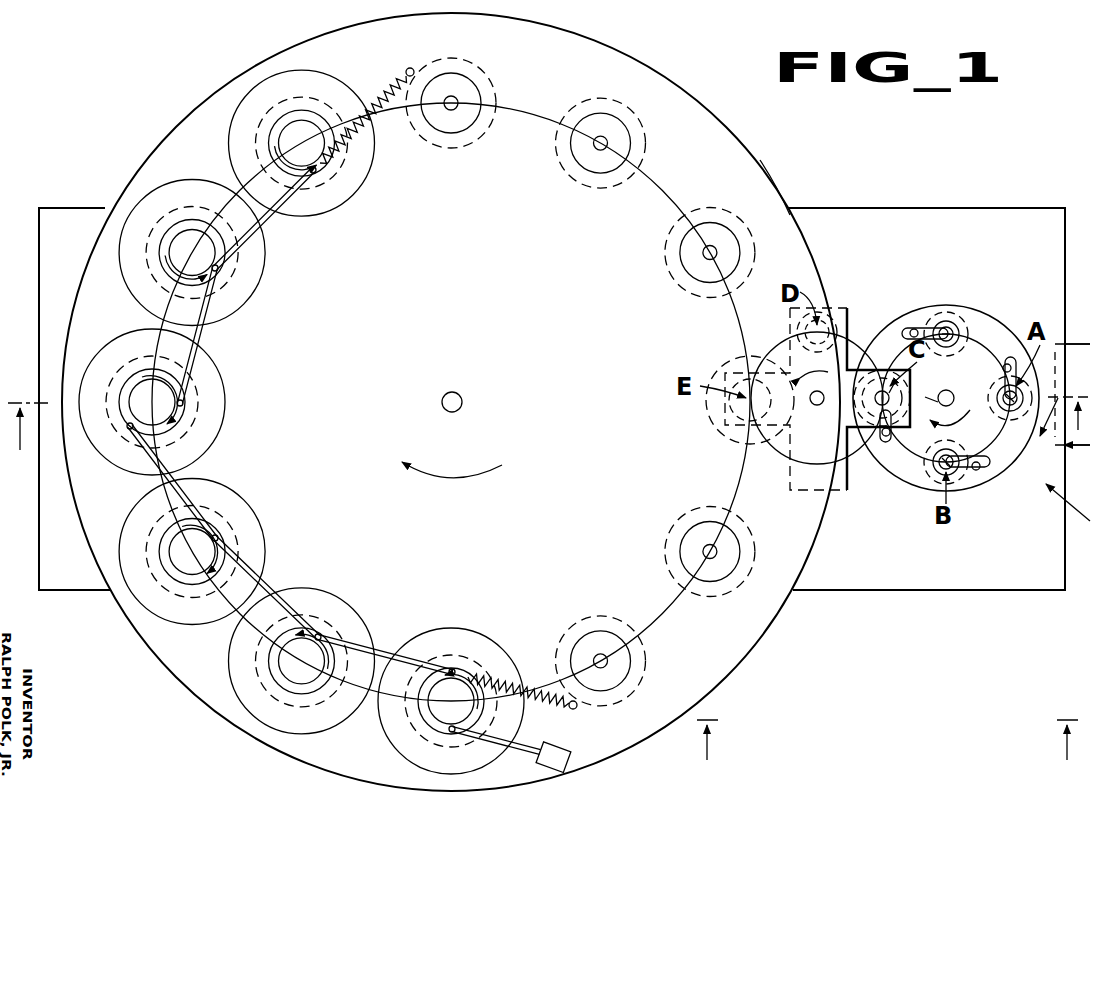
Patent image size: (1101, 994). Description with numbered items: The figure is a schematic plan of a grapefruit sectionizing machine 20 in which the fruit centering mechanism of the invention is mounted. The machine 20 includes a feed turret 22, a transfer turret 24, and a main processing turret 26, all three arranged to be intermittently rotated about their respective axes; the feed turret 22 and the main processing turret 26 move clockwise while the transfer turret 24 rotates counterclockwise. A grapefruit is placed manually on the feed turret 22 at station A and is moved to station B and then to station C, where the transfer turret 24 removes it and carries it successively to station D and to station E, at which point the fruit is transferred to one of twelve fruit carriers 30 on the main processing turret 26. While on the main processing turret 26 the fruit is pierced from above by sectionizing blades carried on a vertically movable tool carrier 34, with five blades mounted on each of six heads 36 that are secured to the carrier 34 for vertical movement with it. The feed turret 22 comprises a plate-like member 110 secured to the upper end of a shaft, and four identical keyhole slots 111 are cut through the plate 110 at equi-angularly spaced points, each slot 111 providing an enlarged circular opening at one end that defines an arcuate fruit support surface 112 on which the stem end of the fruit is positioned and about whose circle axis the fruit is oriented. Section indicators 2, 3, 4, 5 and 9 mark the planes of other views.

The grapefruit sectionizing machine 20 is at (750, 136).
The feed turret 22 is at (951, 379).
The transfer turret 24 is at (845, 306).
The main processing turret 26 is at (660, 190).
The fruit carriers 30 is at (340, 170).
The tool carrier 34 is at (776, 186).
The heads 36 is at (313, 210).
The plate-like member 110 is at (983, 320).
The keyhole slots 111 is at (912, 330).
The arcuate fruit support surface 112 is at (946, 326).
The section line 5- 5 is at (973, 424).
The section line 2- 2 is at (549, 411).
The section line 3- 3 is at (1072, 399).
The section line 4- 4 is at (1065, 502).
The section line 9- 9 is at (887, 728).